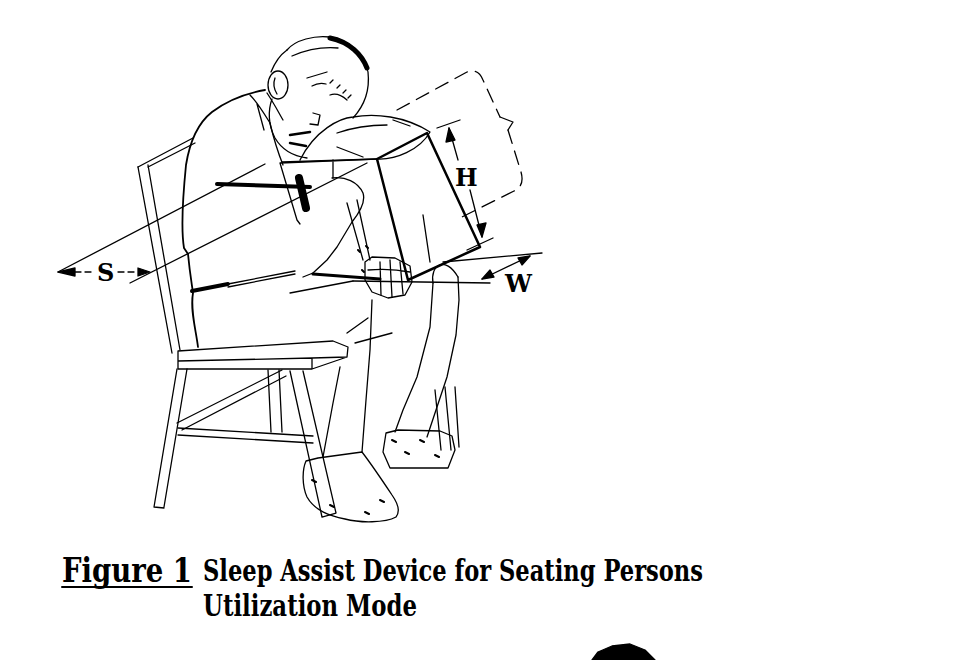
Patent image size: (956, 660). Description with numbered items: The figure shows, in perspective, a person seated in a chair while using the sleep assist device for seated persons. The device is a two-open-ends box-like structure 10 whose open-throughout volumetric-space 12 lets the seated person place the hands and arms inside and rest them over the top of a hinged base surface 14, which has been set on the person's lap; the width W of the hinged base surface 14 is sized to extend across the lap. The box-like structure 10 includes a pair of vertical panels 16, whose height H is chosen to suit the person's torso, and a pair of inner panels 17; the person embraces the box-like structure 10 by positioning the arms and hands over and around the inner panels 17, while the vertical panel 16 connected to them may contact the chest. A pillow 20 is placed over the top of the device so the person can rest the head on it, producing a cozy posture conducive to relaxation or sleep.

The two-open-ends box-like structure 10 is at (538, 215).
The open-throughout volumetric-space 12 is at (513, 122).
The hinged base surface 14 is at (350, 268).
The vertical panel 16 is at (437, 255).
The inner panel 17 is at (228, 183).
The pillow 20 is at (358, 118).